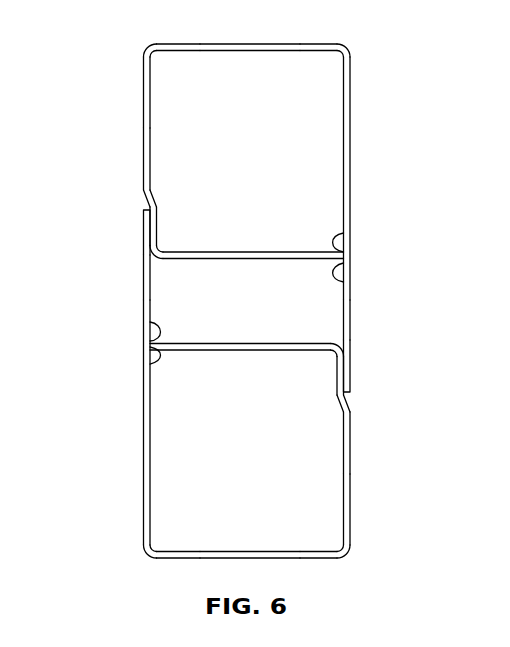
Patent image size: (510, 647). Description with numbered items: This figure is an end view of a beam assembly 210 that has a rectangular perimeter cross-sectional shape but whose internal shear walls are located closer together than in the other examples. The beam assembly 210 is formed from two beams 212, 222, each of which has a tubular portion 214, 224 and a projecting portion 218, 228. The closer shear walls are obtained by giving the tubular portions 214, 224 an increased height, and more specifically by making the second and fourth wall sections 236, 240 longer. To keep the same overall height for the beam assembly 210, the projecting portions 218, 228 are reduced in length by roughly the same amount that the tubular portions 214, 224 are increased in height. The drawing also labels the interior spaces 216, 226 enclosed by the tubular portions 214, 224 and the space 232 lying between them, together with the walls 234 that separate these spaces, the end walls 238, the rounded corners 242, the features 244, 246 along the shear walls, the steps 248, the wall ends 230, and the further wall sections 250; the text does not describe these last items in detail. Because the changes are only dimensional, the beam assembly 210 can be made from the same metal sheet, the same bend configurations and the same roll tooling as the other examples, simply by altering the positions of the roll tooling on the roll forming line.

The beam assembly 210 is at (104, 64).
The beam 212 is at (324, 34).
The tubular portion 214 is at (173, 34).
The first pocket 216 is at (236, 172).
The projecting portion 218 is at (350, 311).
The beam 222 is at (172, 567).
The tubular portion 224 is at (330, 567).
The second pocket 226 is at (236, 466).
The projecting portion 228 is at (144, 280).
The wall end 230 is at (144, 228).
The middle pocket 232 is at (236, 308).
The partition wall 234 is at (223, 252).
The second wall section 236 is at (144, 143).
The end wall 238 is at (233, 44).
The fourth wall section 240 is at (350, 147).
The rounded corner 242 is at (153, 55).
The hook 244 is at (344, 233).
The recess 246 is at (344, 282).
The offset step 248 is at (146, 199).
The side wall section 250 is at (144, 114).